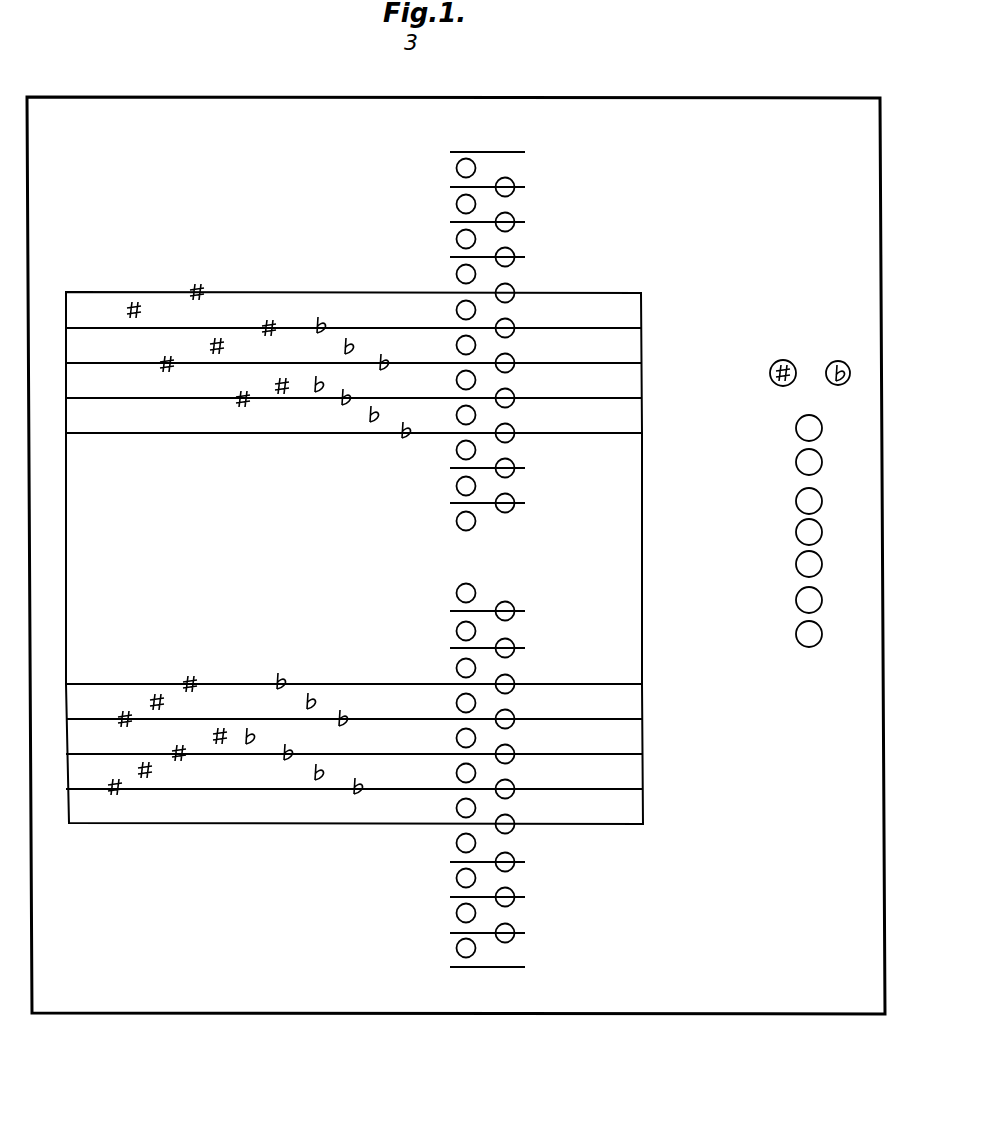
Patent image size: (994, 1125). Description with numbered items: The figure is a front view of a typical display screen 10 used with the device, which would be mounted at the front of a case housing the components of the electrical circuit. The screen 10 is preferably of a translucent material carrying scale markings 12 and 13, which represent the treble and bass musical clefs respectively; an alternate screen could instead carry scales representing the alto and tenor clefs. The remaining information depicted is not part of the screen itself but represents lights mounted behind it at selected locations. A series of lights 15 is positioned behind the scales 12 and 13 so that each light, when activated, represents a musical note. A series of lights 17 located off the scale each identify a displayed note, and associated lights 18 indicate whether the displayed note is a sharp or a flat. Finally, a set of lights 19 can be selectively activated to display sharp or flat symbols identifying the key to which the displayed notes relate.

The display screen 10 is at (196, 98).
The scale markings 12 is at (663, 381).
The scale markings 13 is at (662, 763).
The lights 15 is at (537, 625).
The lights 17 is at (774, 516).
The lights 18 is at (841, 342).
The lights 19 is at (198, 266).